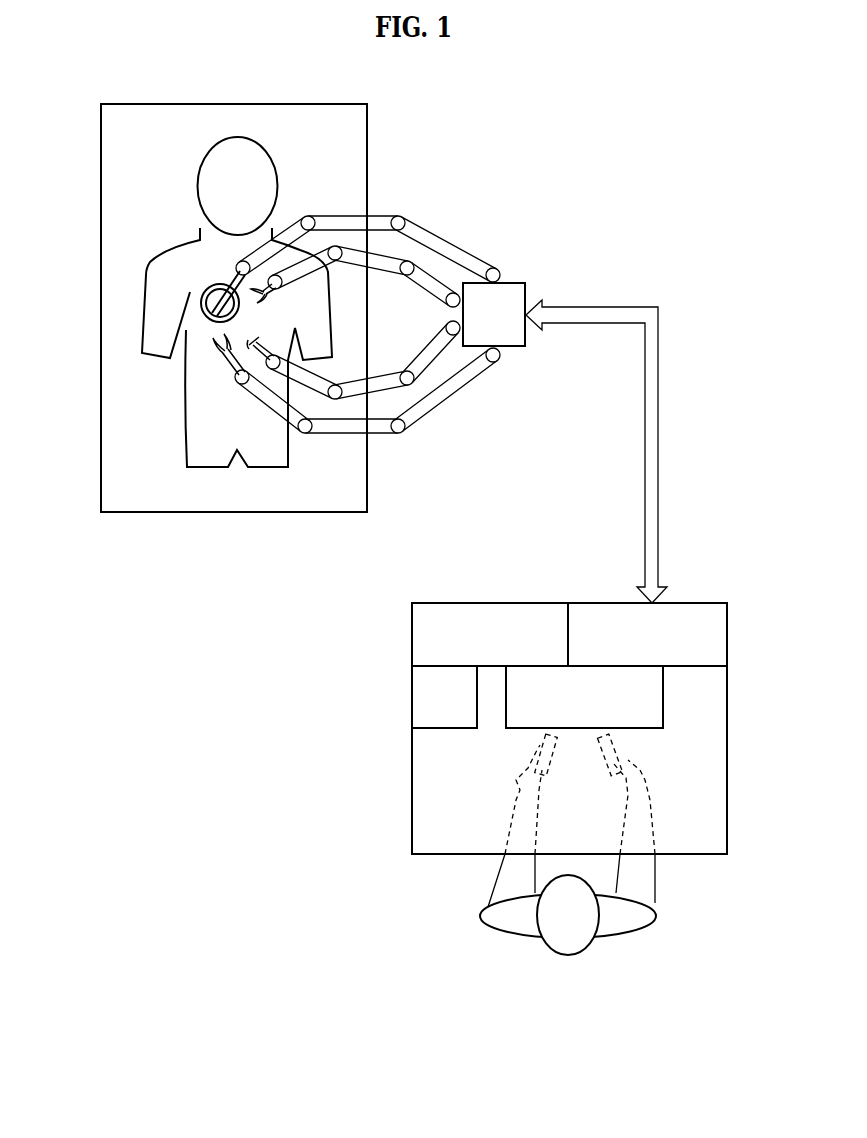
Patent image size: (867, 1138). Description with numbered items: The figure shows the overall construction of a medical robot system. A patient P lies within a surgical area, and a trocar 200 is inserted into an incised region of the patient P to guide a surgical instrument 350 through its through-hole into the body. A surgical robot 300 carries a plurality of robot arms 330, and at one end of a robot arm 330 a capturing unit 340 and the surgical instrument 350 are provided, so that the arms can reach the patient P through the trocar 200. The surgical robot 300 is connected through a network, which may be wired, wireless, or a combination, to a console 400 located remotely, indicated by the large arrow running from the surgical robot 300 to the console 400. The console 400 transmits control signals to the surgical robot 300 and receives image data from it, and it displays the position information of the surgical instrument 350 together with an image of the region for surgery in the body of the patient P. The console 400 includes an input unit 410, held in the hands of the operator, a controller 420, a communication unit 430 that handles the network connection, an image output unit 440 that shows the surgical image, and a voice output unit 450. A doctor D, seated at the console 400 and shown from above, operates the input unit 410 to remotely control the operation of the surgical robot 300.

The patient P is at (273, 152).
The trocar 200 is at (203, 299).
The surgical robot 300 is at (512, 283).
The robot arm 330 is at (377, 214).
The capturing unit 340 is at (265, 343).
The surgical instrument 350 is at (256, 286).
The console 400 is at (567, 728).
The input unit 410 is at (543, 758).
The controller 420 is at (490, 634).
The communication unit 430 is at (647, 634).
The image output unit 440 is at (584, 697).
The voice output unit 450 is at (444, 697).
The doctor D is at (488, 916).